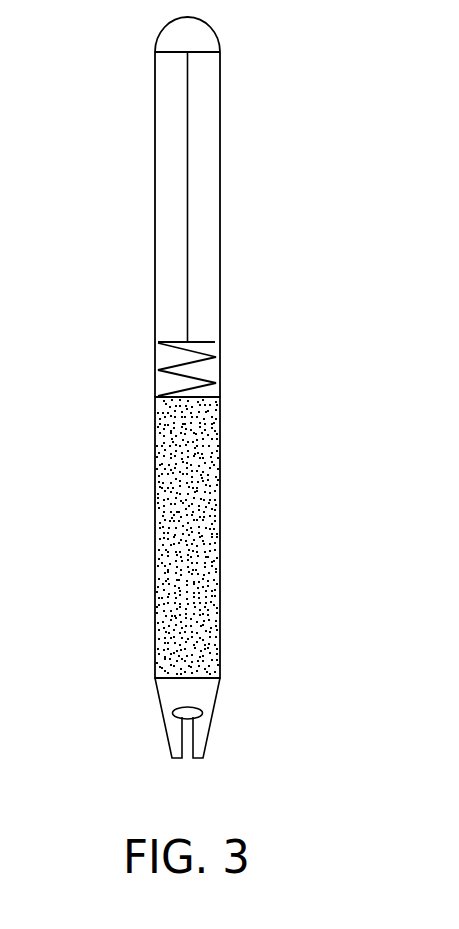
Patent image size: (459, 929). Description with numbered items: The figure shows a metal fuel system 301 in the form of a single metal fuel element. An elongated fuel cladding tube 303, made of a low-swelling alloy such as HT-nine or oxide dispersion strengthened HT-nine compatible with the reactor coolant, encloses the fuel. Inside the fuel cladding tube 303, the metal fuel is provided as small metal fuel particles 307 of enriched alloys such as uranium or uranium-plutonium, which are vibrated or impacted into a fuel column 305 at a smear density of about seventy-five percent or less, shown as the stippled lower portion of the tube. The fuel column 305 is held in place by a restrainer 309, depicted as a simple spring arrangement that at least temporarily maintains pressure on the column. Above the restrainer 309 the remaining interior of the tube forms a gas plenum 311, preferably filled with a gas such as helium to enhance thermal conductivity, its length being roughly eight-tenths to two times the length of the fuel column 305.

The metal fuel system 301 is at (278, 132).
The fuel cladding tube 303 is at (154, 118).
The fuel column 305 is at (154, 500).
The metal fuel particles 307 is at (176, 598).
The restrainer 309 is at (185, 200).
The plenum 311 is at (172, 283).